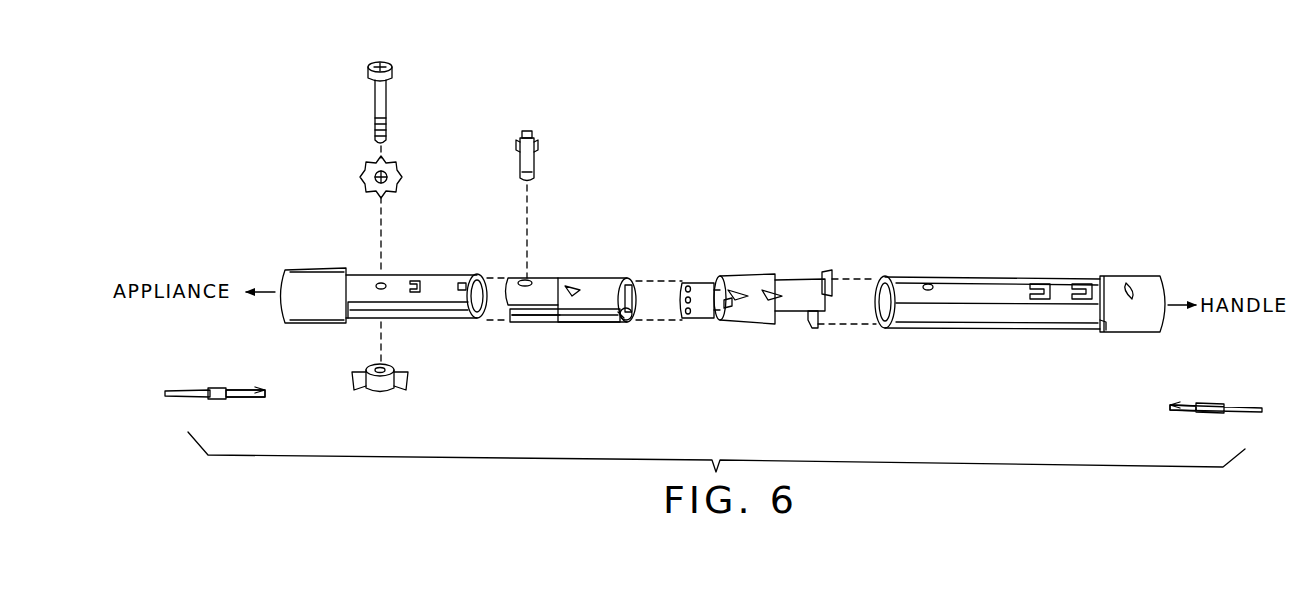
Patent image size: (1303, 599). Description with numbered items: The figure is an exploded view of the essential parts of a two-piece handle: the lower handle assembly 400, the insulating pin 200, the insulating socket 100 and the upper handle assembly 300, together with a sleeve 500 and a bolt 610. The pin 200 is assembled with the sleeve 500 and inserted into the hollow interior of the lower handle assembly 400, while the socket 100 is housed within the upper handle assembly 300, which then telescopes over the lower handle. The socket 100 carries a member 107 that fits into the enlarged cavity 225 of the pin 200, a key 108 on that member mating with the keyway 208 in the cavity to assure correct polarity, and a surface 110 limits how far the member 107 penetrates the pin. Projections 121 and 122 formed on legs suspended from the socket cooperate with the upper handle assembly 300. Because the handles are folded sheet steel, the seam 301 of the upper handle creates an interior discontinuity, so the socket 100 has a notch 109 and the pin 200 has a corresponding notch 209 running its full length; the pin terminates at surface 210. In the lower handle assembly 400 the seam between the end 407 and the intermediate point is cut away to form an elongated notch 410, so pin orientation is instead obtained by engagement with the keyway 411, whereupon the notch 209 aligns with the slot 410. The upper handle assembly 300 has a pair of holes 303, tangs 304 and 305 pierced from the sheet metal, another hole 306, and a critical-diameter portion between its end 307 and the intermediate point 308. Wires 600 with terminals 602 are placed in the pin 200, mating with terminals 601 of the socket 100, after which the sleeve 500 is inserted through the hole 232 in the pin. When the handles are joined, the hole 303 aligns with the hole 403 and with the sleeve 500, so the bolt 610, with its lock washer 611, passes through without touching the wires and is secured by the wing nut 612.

The insulating socket 100 is at (759, 275).
The member 107 is at (700, 306).
The key 108 is at (683, 300).
The notch 109 is at (731, 312).
The surface 110 is at (718, 315).
The projection 121 is at (816, 328).
The projection 122 is at (829, 278).
The insulating pin 200 is at (606, 275).
The keyway 208 is at (631, 302).
The notch 209 is at (520, 306).
The surface 210 is at (621, 319).
The enlarged cavity 225 is at (629, 321).
The hole 232 is at (528, 285).
The upper handle assembly 300 is at (991, 276).
The seam 301 is at (918, 317).
The hole 303 is at (929, 284).
The tang 304 is at (1043, 287).
The tang 305 is at (1080, 287).
The hole 306 is at (1130, 285).
The end 307 is at (882, 322).
The intermediate point 308 is at (1103, 327).
The lower handle assembly 400 is at (323, 266).
The hole 403 is at (388, 283).
The end 407 is at (483, 290).
The elongated notch 410 is at (445, 305).
The keyway 411 is at (462, 282).
The sleeve 500 is at (539, 159).
The wire 600 is at (212, 401).
The terminal 601 is at (1173, 411).
The terminal 602 is at (258, 397).
The bolt 610 is at (392, 94).
The lock washer 611 is at (397, 170).
The wing nut 612 is at (392, 382).